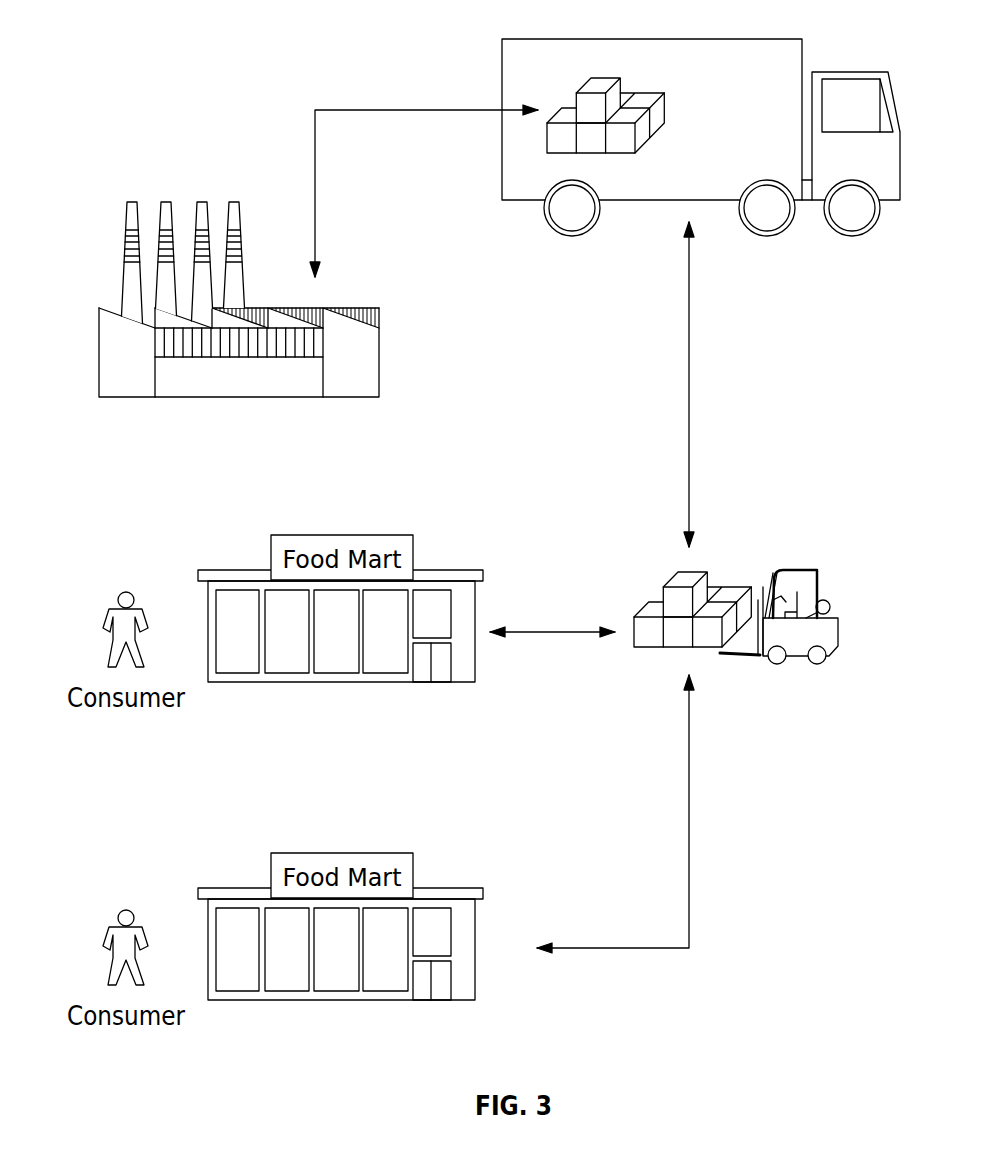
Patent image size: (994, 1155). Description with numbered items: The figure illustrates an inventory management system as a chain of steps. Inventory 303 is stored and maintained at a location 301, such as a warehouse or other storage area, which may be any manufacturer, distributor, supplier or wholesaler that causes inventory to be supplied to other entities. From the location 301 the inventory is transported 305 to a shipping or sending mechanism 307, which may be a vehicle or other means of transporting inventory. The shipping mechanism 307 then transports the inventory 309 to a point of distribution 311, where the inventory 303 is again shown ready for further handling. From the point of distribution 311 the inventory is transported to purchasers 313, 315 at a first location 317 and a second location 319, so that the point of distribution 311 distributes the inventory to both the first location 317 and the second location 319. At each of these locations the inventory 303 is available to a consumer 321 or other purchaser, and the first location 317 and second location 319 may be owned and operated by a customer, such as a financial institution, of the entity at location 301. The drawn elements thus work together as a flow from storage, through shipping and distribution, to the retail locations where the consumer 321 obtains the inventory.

The location 301 is at (262, 397).
The inventory 303 is at (602, 83).
The transport 305 is at (388, 110).
The shipping mechanism 307 is at (737, 39).
The inventory transport 309 is at (689, 385).
The point of distribution 311 is at (797, 570).
The transport to purchaser 313 is at (553, 630).
The transport to purchaser 315 is at (690, 822).
The first location 317 is at (457, 568).
The second location 319 is at (448, 887).
The consumer 321 is at (125, 591).